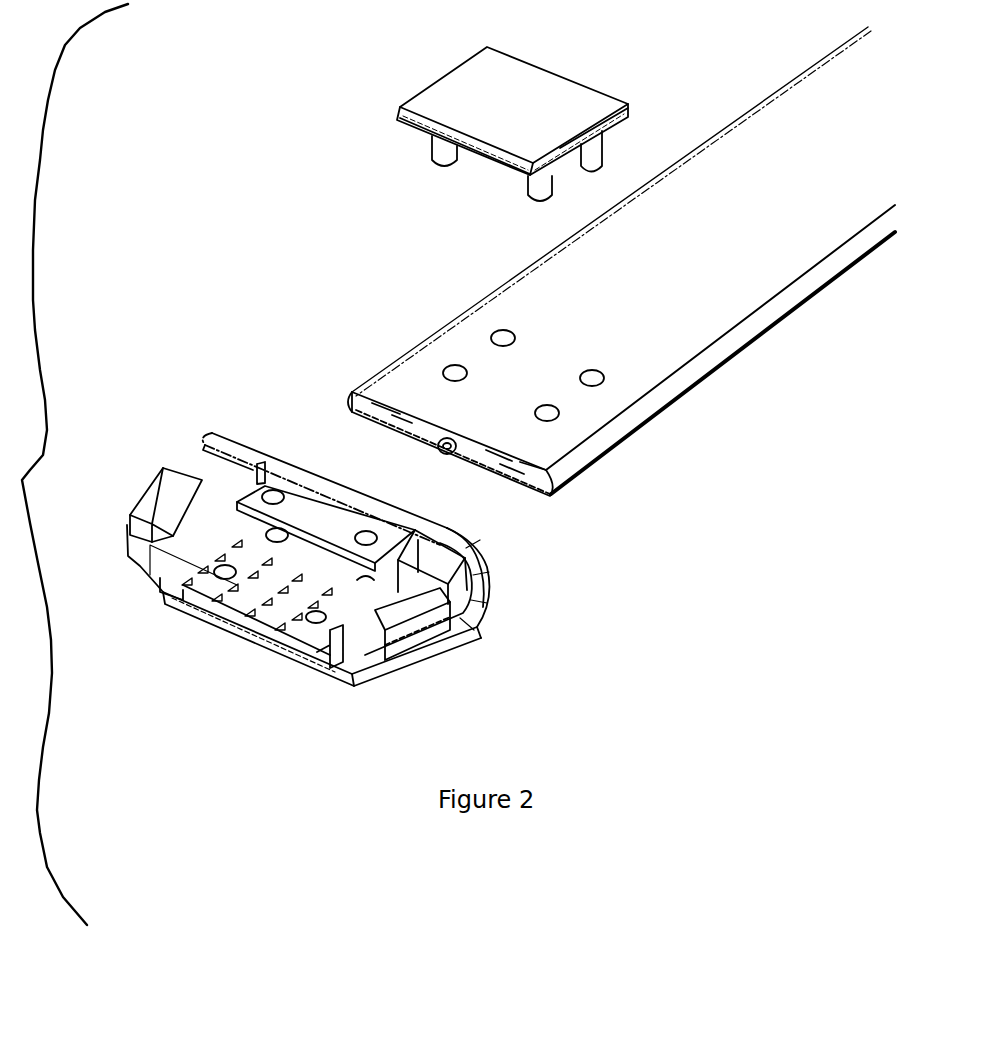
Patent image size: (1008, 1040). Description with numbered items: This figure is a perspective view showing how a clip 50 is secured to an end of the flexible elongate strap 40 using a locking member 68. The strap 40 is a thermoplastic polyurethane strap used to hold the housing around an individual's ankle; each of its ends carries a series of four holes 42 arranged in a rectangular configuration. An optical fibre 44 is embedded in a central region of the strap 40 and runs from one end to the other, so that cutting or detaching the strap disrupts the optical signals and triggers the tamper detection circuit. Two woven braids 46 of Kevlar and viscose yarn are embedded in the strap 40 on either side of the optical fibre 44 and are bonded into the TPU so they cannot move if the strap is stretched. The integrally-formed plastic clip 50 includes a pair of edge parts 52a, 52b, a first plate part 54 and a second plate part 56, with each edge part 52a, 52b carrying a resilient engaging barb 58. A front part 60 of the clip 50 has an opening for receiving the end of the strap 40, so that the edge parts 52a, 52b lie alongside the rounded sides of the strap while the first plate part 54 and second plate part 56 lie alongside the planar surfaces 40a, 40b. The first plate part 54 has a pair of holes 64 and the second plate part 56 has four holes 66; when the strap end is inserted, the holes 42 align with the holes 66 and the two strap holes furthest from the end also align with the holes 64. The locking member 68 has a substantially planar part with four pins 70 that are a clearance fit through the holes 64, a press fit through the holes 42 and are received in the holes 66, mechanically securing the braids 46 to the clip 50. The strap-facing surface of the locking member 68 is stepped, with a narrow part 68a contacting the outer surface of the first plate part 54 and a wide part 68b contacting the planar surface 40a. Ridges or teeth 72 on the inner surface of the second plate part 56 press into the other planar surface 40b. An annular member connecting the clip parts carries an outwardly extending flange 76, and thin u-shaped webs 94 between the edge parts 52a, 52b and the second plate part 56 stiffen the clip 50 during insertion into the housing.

The flexible elongate strap 40 is at (737, 290).
The planar surface 40a is at (560, 443).
The planar surface 40b is at (360, 423).
The holes 42 is at (503, 338).
The optical fibre 44 is at (447, 455).
The woven braids 46 is at (397, 427).
The clip 50 is at (252, 395).
The edge part 52a is at (203, 485).
The edge part 52b is at (407, 568).
The first plate part 54 is at (388, 540).
The second plate part 56 is at (297, 637).
The resilient engaging barb 58 is at (163, 487).
The front part 60 is at (512, 568).
The holes 64 is at (369, 542).
The holes 66 is at (275, 535).
The locking member 68 is at (453, 90).
The narrow part 68a is at (620, 115).
The wide part 68b is at (560, 155).
The pins 70 is at (590, 157).
The ridges or teeth 72 is at (247, 622).
The outwardly extending flange 76 is at (467, 597).
The u-shaped webs 94 is at (163, 588).